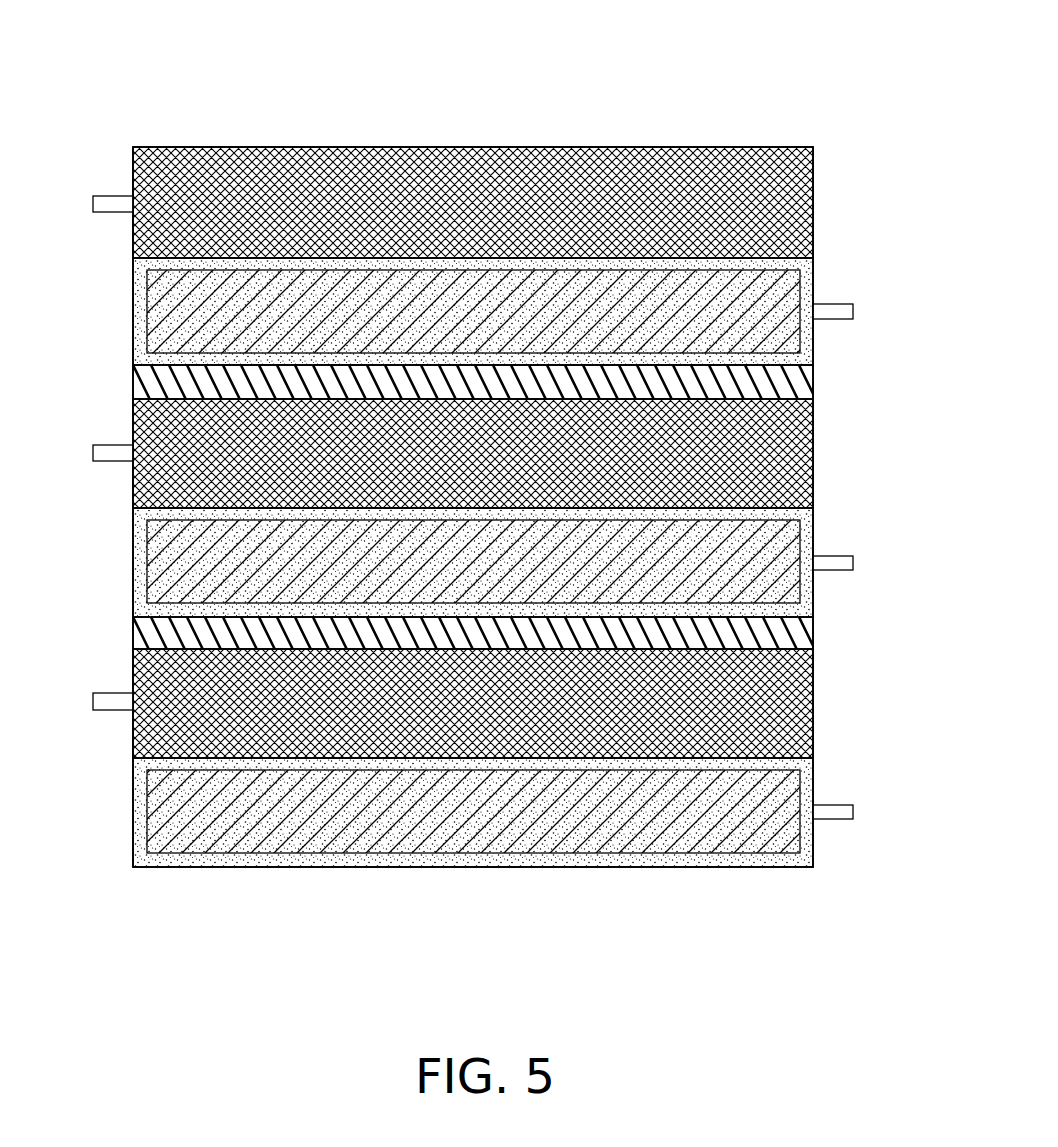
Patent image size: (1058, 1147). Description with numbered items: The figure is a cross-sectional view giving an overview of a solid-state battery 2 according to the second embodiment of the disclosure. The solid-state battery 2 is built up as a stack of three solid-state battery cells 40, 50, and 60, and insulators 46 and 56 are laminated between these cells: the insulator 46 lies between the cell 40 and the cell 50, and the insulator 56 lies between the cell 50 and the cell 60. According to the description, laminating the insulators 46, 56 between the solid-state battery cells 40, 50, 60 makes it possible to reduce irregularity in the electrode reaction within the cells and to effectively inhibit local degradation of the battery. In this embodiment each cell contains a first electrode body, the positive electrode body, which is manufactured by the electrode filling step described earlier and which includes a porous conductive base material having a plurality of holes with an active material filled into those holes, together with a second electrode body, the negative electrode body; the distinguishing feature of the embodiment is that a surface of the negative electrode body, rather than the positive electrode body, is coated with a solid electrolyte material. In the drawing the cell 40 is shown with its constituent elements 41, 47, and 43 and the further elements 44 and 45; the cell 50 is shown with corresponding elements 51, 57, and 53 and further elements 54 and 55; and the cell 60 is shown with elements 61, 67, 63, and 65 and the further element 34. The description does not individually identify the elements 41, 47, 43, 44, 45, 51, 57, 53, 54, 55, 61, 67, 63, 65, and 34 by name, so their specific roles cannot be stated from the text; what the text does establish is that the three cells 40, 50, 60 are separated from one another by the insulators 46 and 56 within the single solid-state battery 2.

The solid-state battery 2 is at (778, 88).
The solid-state battery cell 40 is at (504, 256).
The first positive electrode layer 41 is at (806, 180).
The first electrolyte layer 47 is at (813, 267).
The first negative electrode layer 43 is at (790, 294).
The first negative electrode terminal 45 is at (828, 319).
The first positive electrode terminal 44 is at (120, 209).
The insulator 46 is at (813, 383).
The solid-state battery cell 50 is at (504, 508).
The second positive electrode layer 51 is at (806, 432).
The second electrolyte layer 57 is at (813, 517).
The second negative electrode layer 53 is at (790, 543).
The second negative electrode terminal 55 is at (828, 570).
The second positive electrode terminal 54 is at (120, 458).
The insulator 56 is at (813, 633).
The solid-state battery cell 60 is at (504, 758).
The third positive electrode layer 61 is at (806, 680).
The third electrolyte layer 67 is at (813, 765).
The third negative electrode layer 63 is at (790, 793).
The third negative electrode terminal 65 is at (828, 819).
The third positive electrode terminal 34 is at (120, 707).